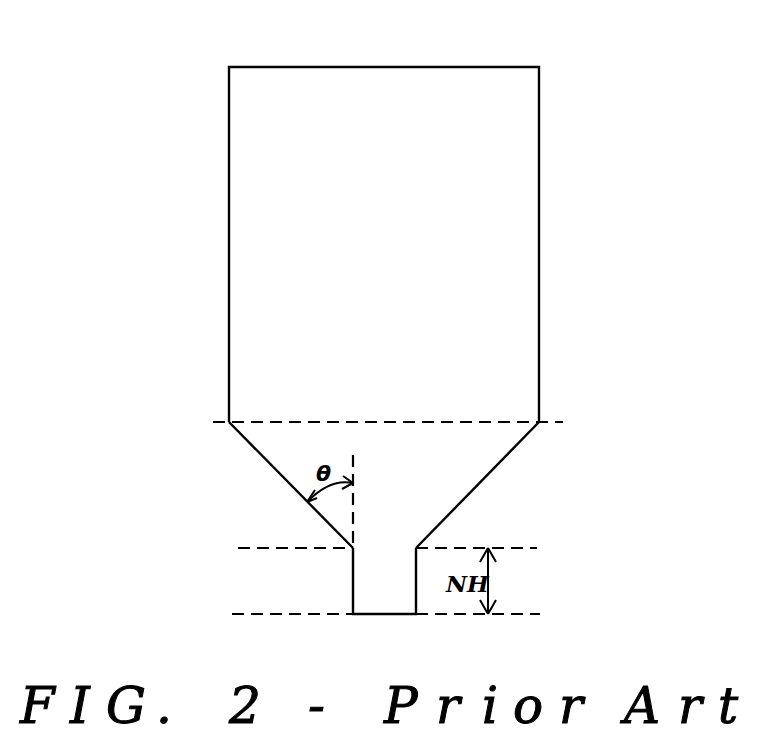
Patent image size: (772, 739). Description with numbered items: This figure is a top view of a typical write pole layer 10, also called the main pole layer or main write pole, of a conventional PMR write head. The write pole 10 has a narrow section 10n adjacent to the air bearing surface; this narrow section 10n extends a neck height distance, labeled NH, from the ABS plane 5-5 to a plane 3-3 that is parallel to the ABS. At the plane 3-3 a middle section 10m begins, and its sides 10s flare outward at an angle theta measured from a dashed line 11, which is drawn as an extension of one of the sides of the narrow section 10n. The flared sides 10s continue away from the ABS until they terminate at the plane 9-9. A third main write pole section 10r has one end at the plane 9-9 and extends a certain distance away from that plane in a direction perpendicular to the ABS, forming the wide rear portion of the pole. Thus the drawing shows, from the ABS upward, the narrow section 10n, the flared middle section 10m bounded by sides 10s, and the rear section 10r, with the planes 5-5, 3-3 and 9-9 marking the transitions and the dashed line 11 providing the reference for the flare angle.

The write pole layer 10 is at (407, 319).
The third main write pole section 10r is at (505, 272).
The sides 10s is at (268, 468).
The middle section 10m is at (443, 477).
The narrow section 10n is at (380, 583).
The plane 9- 9 is at (388, 423).
The dashed line 11 is at (357, 486).
The plane 3- 3 is at (385, 549).
The ABS plane 5- 5 is at (387, 615).